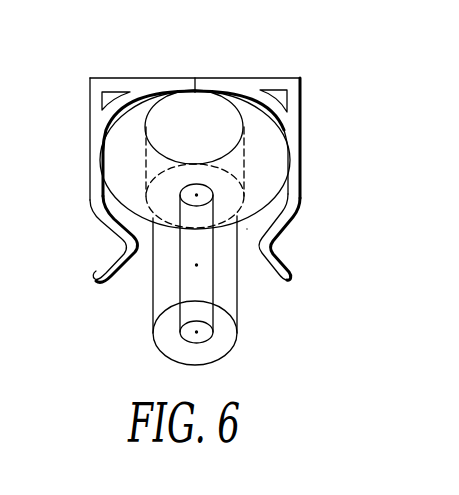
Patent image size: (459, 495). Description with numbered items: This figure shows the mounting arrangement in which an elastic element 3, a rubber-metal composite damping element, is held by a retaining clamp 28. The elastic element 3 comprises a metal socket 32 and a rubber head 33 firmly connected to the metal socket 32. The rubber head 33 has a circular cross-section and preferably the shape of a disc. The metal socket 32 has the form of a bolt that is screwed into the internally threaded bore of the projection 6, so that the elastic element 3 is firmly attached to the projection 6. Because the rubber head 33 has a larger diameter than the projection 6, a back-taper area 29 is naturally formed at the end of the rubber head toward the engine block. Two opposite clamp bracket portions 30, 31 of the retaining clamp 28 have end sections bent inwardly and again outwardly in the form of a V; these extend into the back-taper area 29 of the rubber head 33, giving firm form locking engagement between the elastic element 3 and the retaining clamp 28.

The retaining clamp 28 is at (222, 85).
The clamp bracket portion 30 is at (110, 221).
The clamp bracket portion 31 is at (280, 217).
The elastic element 3 is at (263, 143).
The rubber head 33 is at (177, 130).
The back-taper area 29 is at (248, 215).
The projection 6 is at (163, 288).
The metal socket 32 is at (196, 283).